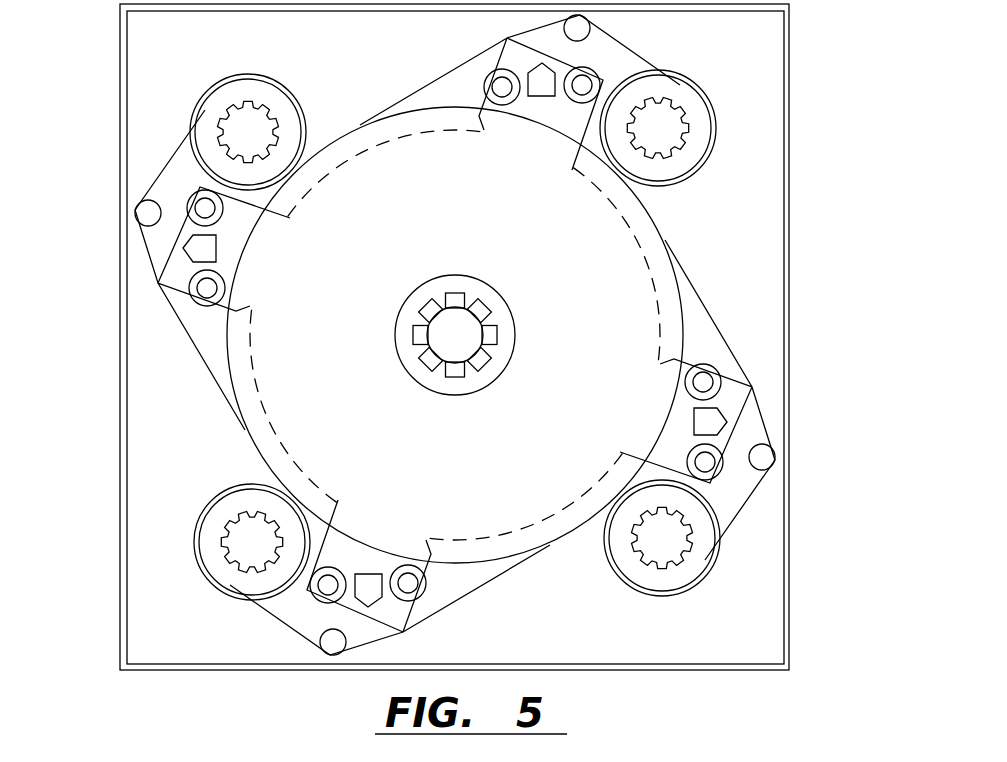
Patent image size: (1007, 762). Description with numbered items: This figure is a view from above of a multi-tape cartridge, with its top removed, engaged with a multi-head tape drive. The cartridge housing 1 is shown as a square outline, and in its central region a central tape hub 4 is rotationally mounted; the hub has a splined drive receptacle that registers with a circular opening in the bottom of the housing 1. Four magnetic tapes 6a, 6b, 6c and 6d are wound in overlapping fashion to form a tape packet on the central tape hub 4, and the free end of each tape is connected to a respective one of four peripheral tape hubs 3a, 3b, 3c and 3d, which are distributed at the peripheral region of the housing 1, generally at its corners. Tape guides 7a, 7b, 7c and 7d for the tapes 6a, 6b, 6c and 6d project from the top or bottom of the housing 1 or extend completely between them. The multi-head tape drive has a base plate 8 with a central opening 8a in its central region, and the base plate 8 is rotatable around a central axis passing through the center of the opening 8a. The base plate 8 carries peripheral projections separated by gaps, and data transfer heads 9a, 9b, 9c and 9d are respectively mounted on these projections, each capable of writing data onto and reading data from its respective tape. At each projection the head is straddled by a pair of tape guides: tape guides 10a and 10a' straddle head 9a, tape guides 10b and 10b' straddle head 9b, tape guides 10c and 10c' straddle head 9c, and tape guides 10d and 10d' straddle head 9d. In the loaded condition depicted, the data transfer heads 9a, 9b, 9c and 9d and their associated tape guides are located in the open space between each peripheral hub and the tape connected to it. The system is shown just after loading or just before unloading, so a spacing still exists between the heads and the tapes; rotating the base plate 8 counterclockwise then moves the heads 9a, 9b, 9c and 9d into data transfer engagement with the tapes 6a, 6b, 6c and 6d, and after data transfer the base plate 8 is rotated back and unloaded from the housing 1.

The housing 1 is at (793, 45).
The base plate 8 is at (597, 250).
The central opening 8a is at (505, 302).
The central tape hub 4 is at (502, 357).
The magnetic tape 6a is at (202, 352).
The magnetic tape 6b is at (485, 585).
The magnetic tape 6c is at (698, 302).
The magnetic tape 6d is at (428, 103).
The peripheral tape hub 3a is at (280, 100).
The peripheral tape hub 3b is at (238, 503).
The peripheral tape hub 3c is at (628, 578).
The peripheral tape hub 3d is at (703, 117).
The tape guide 7a is at (148, 213).
The tape guide 7b is at (330, 641).
The tape guide 7c is at (767, 463).
The tape guide 7d is at (580, 33).
The data transfer head 9a is at (200, 250).
The data transfer head 9b is at (365, 590).
The data transfer head 9c is at (708, 430).
The data transfer head 9d is at (543, 95).
The tape guide 10a is at (137, 318).
The tape guide 10a' is at (182, 135).
The tape guide 10b is at (434, 606).
The tape guide 10b' is at (244, 600).
The tape guide 10c is at (716, 354).
The tape guide 10c' is at (729, 523).
The tape guide 10d is at (457, 69).
The tape guide 10d' is at (635, 66).